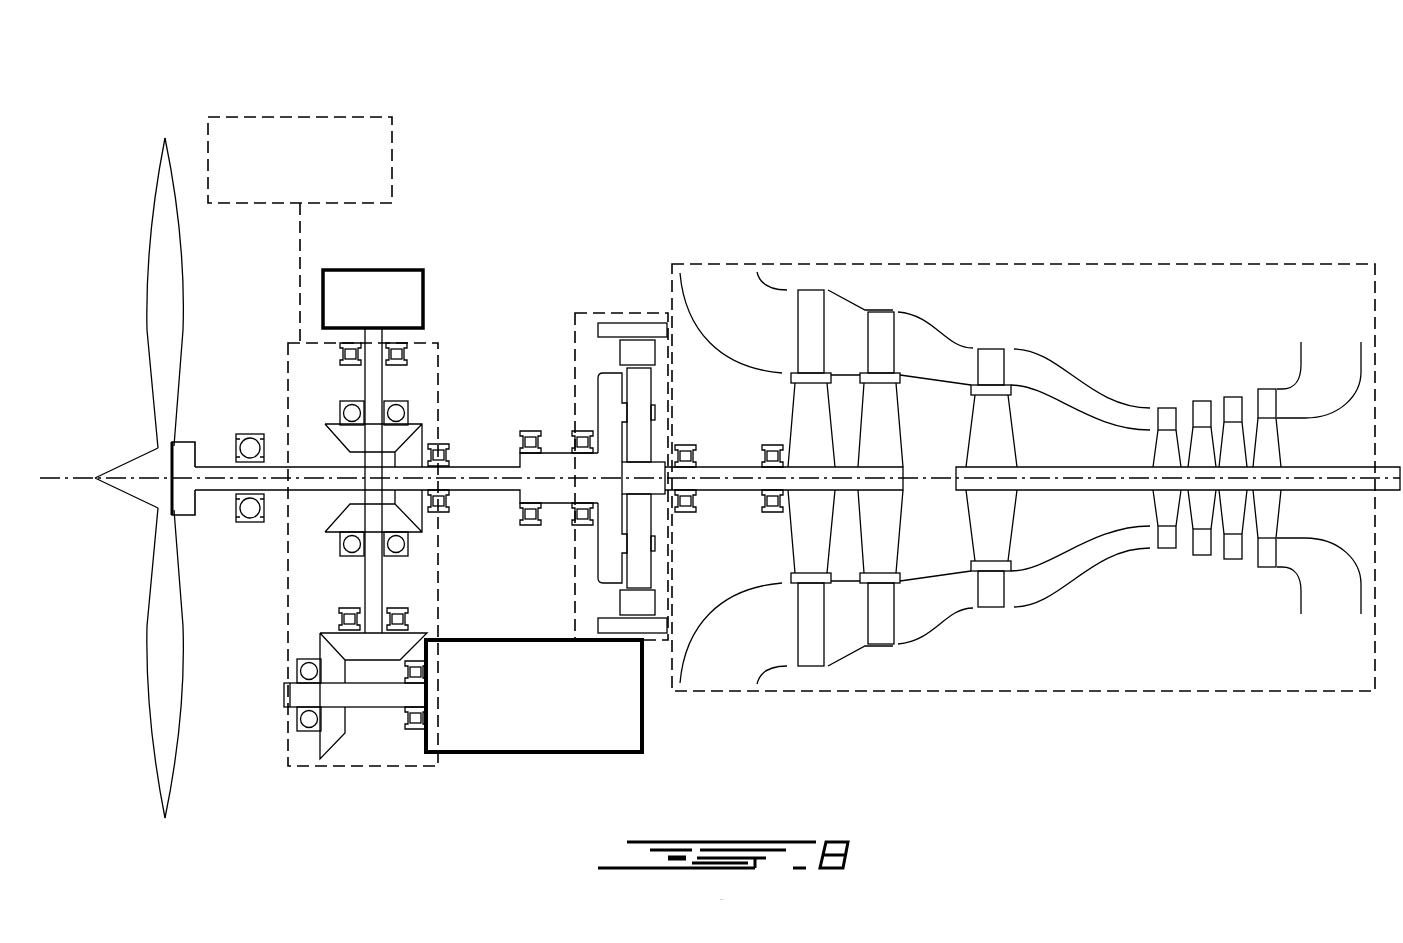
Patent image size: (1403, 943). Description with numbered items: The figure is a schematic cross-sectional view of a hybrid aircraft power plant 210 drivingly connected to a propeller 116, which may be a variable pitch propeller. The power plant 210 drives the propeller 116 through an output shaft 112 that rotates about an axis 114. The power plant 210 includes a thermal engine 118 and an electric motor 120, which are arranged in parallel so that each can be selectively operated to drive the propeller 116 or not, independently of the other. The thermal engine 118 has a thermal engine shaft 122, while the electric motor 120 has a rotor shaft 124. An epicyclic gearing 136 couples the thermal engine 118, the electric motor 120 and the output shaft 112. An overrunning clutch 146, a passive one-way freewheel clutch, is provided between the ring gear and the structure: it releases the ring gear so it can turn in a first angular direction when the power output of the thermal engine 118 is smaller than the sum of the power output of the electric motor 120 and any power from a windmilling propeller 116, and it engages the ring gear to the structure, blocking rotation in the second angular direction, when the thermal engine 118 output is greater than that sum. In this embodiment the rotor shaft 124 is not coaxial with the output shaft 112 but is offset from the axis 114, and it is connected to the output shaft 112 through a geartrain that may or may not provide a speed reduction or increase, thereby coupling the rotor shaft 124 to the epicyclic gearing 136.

The output shaft 112 is at (480, 466).
The axis 114 is at (60, 475).
The propeller 116 is at (165, 137).
The thermal engine 118 is at (1032, 427).
The electric motor 120 is at (533, 752).
The thermal engine shaft 122 is at (722, 470).
The rotor shaft 124 is at (377, 708).
The epicyclic gearing 136 is at (630, 409).
The overrunning clutch 146 is at (615, 322).
The power plant 210 is at (355, 97).